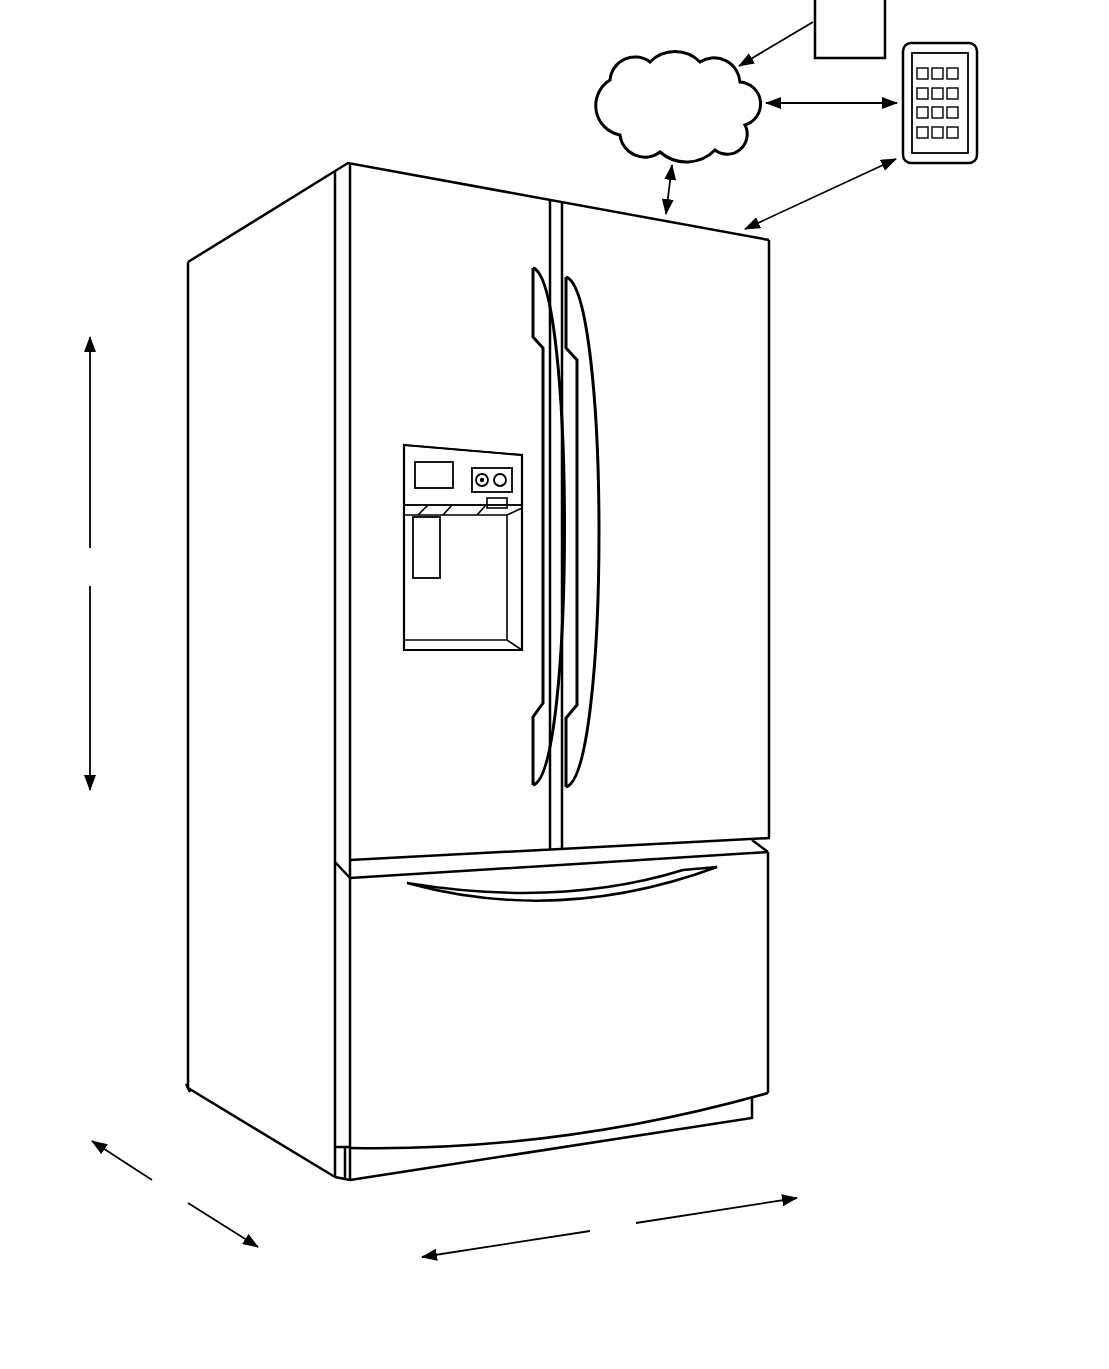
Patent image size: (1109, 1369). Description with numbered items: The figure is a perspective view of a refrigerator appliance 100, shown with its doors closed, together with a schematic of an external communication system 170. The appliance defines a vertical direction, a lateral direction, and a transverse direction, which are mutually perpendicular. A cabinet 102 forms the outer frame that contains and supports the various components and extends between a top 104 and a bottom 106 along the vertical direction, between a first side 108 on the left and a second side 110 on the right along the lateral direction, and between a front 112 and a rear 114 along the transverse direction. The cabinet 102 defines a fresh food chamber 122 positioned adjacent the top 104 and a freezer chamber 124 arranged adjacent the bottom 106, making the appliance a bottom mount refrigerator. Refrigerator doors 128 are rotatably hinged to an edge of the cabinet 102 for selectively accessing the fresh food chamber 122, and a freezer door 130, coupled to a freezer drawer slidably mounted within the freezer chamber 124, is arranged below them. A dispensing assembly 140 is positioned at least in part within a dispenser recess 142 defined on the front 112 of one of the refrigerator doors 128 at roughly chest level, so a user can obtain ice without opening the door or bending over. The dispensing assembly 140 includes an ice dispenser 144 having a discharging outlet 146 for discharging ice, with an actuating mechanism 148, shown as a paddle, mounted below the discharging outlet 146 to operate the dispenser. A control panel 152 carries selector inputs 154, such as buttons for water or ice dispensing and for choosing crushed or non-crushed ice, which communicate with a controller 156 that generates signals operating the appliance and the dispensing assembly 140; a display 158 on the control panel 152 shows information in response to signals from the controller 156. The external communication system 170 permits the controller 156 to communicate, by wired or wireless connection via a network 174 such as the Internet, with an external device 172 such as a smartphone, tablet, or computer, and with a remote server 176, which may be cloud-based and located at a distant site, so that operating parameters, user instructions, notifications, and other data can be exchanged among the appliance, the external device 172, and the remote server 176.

The refrigerator appliance 100 is at (296, 98).
The cabinet 102 is at (260, 255).
The top 104 is at (184, 262).
The bottom 106 is at (174, 1086).
The first side 108 is at (345, 1191).
The second side 110 is at (756, 1125).
The front 112 is at (326, 1183).
The rear 114 is at (184, 1095).
The fresh food chamber 122 is at (806, 242).
The freezer chamber 124 is at (806, 850).
The refrigerator doors 128 is at (472, 311).
The freezer door 130 is at (607, 1006).
The dispensing assembly 140 is at (412, 408).
The dispenser recess 142 is at (467, 645).
The ice dispenser 144 is at (402, 573).
The discharging outlet 146 is at (424, 523).
The actuating mechanism 148 is at (432, 562).
The control panel 152 is at (398, 469).
The selector inputs 154 is at (483, 472).
The controller 156 is at (513, 476).
The display 158 is at (434, 470).
The external communication system 170 is at (602, 48).
The external device 172 is at (937, 165).
The network 174 is at (697, 121).
The remote server 176 is at (867, 40).